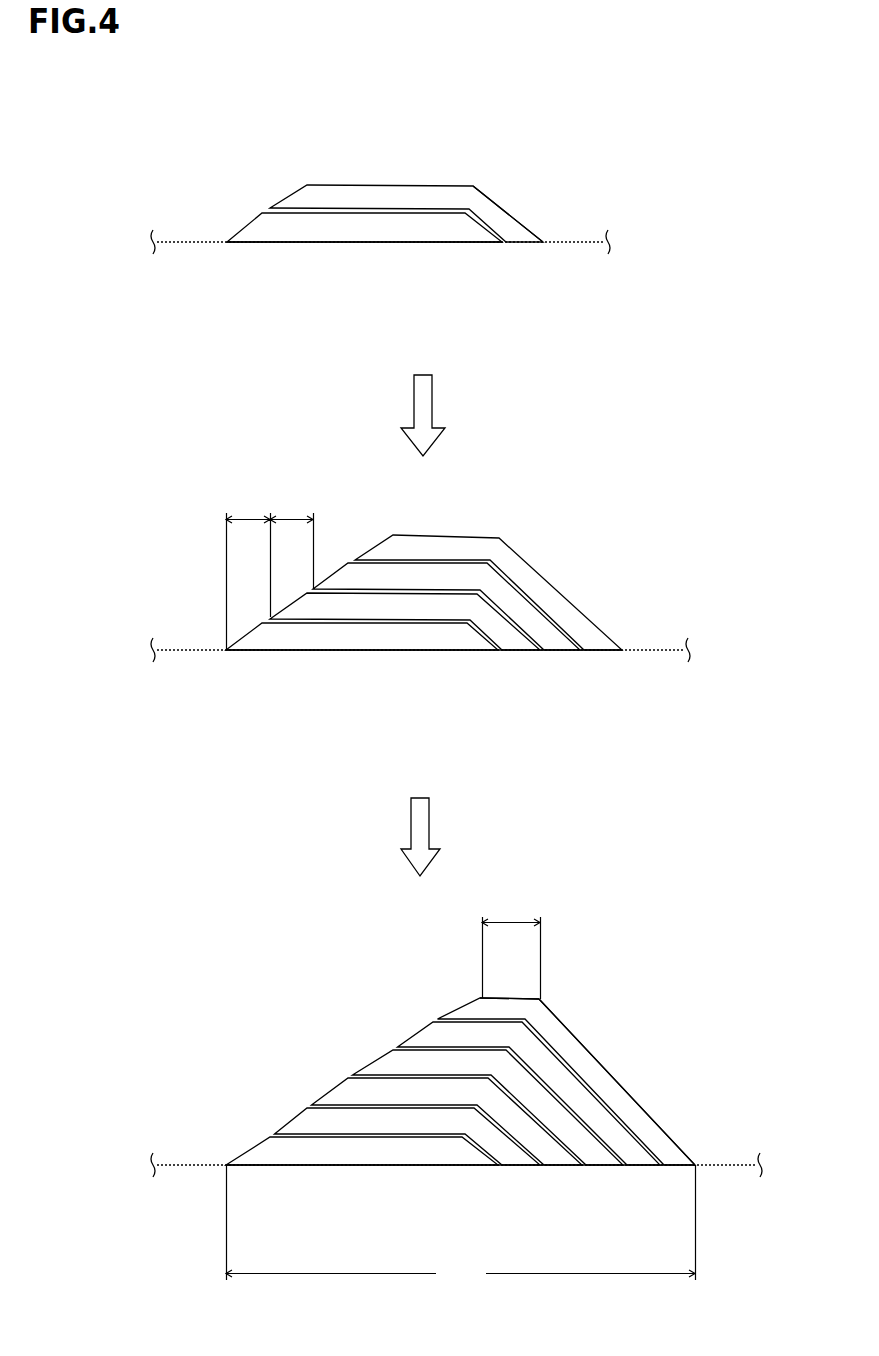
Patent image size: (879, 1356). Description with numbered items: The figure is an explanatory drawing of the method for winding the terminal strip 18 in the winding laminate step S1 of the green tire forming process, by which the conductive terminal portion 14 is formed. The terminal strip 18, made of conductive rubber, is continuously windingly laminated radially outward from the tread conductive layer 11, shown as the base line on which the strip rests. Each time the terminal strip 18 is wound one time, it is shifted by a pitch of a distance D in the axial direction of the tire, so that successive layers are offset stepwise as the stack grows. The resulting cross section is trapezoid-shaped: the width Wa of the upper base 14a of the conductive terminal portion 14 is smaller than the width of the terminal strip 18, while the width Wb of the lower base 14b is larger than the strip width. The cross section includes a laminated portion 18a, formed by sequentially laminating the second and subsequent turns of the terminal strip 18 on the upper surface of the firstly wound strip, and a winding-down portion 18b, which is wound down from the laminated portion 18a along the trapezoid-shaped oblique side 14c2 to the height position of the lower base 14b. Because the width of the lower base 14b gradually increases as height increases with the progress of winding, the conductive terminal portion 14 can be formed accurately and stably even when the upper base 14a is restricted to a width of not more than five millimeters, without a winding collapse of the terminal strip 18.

The winding laminate step S1 is at (573, 162).
The tread conductive layer 11 is at (575, 242).
The conductive terminal portion 14 is at (630, 1042).
The upper base 14a is at (512, 998).
The lower base 14b is at (437, 243).
The trapezoid-shaped oblique side 14c2 is at (645, 1107).
The terminal strip 18 is at (317, 226).
The laminated portion 18a is at (390, 197).
The winding-down portion 18b is at (503, 222).
The width of the upper base Wa is at (511, 945).
The width of the lower base Wb is at (461, 1226).
The distance D is at (270, 568).